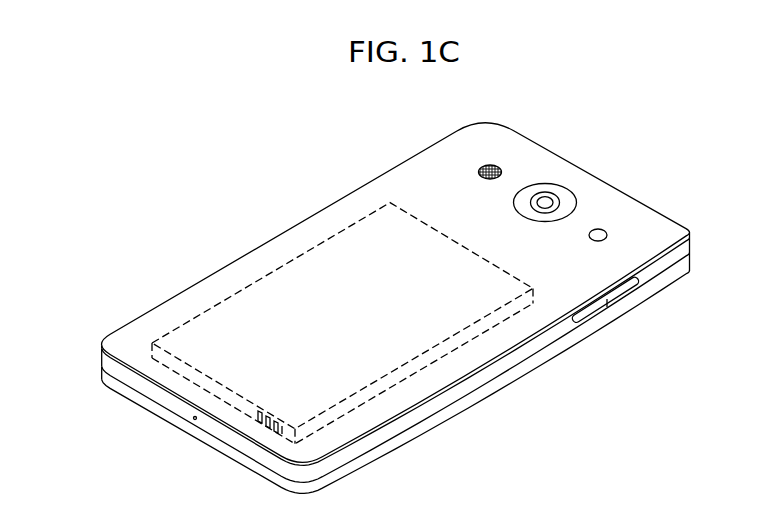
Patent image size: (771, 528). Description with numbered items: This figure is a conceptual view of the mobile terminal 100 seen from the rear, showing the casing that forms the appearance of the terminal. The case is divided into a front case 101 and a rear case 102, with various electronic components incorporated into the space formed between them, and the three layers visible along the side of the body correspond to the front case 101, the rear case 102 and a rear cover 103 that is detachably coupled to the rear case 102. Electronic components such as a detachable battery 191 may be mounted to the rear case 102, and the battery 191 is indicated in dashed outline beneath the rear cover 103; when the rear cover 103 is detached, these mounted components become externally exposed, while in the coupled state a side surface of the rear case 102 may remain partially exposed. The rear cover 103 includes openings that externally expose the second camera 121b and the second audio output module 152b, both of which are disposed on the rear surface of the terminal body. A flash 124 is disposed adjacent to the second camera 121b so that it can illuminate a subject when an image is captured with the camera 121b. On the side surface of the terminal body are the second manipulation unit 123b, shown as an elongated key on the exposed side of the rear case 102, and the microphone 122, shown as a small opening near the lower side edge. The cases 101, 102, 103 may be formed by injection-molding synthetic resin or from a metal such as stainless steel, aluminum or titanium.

The mobile terminal 100 is at (285, 183).
The front case 101 is at (690, 271).
The rear case 102 is at (690, 251).
The rear cover 103 is at (688, 231).
The second camera 121b is at (548, 200).
The microphone 122 is at (194, 419).
The second manipulation unit 123b is at (592, 314).
The flash 124 is at (603, 231).
The second audio output module 152b is at (497, 165).
The battery 191 is at (423, 368).